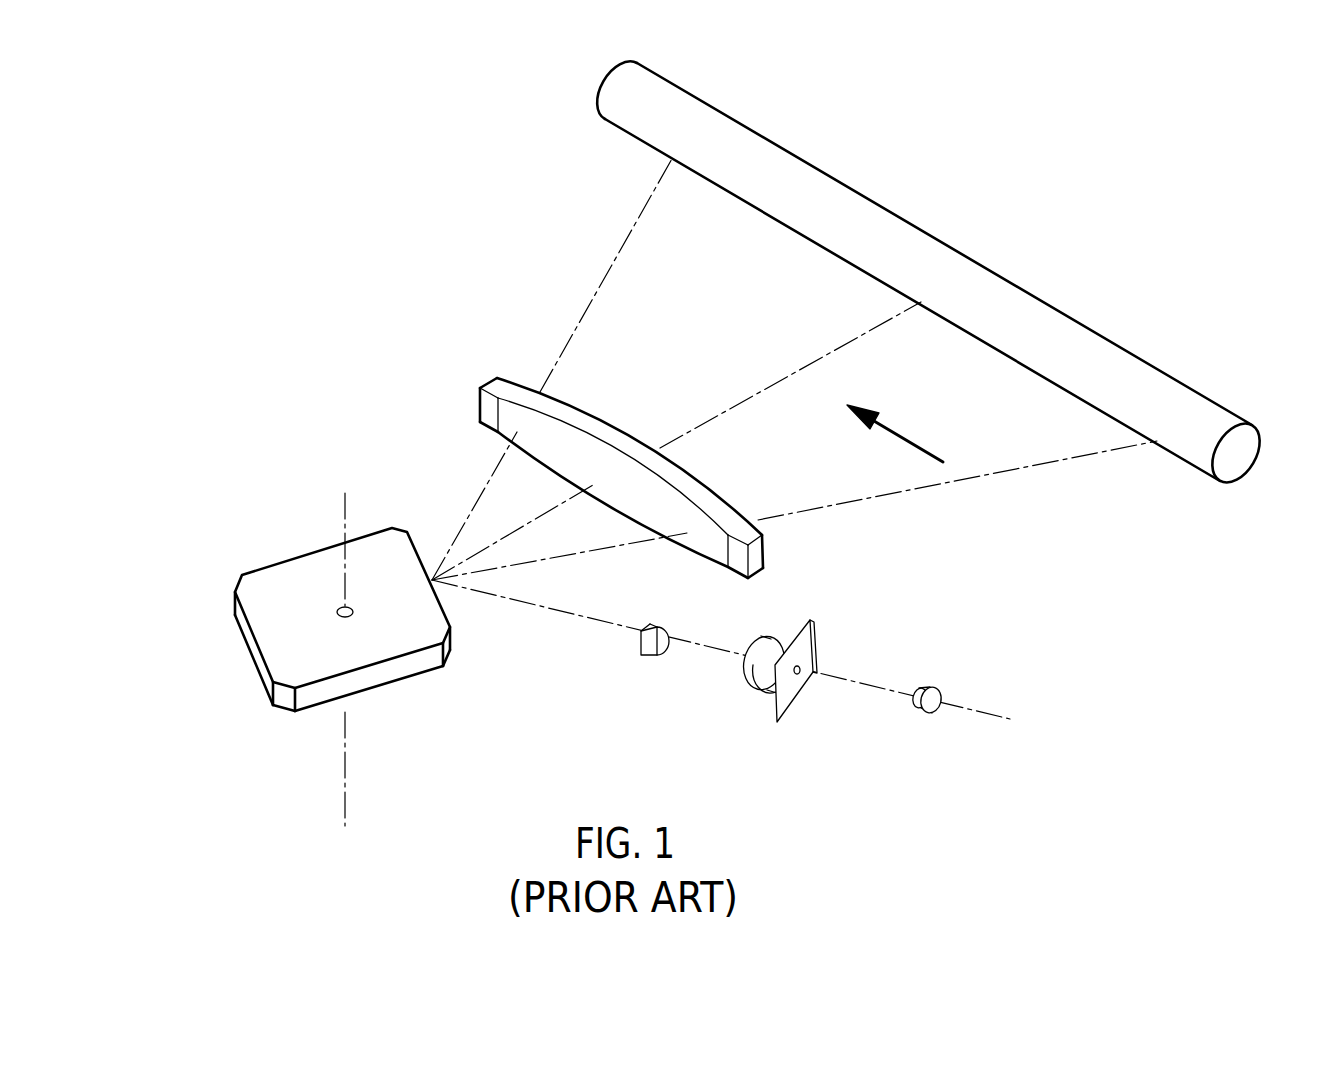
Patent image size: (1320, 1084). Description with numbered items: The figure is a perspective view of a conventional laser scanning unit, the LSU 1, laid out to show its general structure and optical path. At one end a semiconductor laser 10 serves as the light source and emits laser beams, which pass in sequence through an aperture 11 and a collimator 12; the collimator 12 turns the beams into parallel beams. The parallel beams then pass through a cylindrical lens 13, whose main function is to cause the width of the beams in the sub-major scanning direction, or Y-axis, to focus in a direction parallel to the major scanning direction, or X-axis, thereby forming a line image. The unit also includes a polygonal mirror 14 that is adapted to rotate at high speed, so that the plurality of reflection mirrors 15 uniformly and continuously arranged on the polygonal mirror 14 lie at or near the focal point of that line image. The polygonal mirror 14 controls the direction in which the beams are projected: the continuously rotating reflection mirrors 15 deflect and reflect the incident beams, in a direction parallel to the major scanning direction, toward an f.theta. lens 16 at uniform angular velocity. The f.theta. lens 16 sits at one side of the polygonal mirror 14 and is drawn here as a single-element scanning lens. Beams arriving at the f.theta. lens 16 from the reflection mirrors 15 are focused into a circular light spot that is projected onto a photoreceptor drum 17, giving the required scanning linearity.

The LSU 1 is at (262, 312).
The semiconductor laser 10 is at (940, 692).
The aperture 11 is at (803, 656).
The collimator 12 is at (768, 672).
The cylindrical lens 13 is at (644, 652).
The polygonal mirror 14 is at (310, 597).
The reflection mirror 15 is at (253, 643).
The f.theta. lens 16 is at (515, 398).
The photoreceptor drum 17 is at (935, 270).